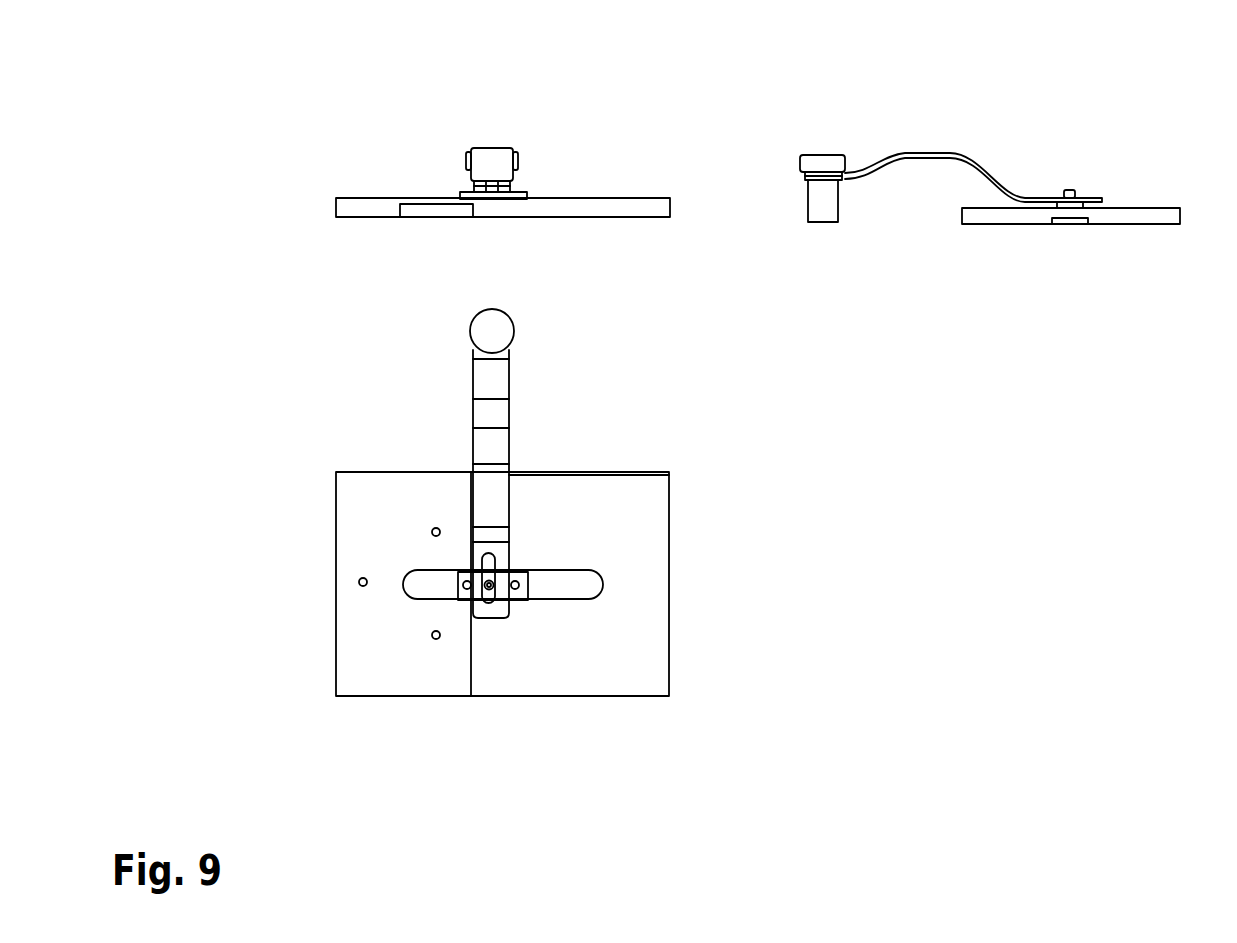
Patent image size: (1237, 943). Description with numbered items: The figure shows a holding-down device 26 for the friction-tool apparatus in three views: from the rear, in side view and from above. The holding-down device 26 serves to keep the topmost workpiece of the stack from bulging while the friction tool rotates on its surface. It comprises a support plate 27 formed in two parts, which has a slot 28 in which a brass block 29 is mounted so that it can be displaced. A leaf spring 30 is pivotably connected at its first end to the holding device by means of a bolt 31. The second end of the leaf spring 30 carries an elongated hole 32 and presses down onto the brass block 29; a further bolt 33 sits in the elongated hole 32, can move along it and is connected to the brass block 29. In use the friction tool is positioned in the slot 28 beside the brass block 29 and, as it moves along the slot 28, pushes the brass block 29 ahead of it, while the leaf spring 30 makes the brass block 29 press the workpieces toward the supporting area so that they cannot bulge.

The holding-down device 26 is at (1108, 167).
The support plate 27 is at (597, 207).
The slot 28 is at (577, 581).
The brass block 29 is at (522, 592).
The leaf spring 30 is at (500, 167).
The bolt 31 is at (490, 332).
The elongated hole 32 is at (490, 562).
The bolt 33 is at (488, 588).